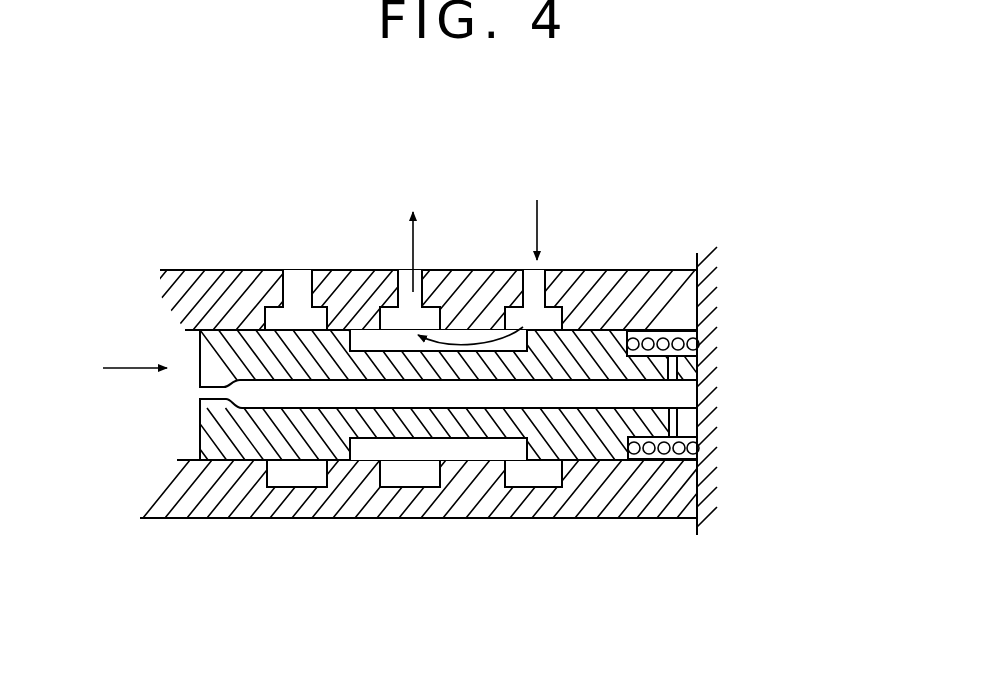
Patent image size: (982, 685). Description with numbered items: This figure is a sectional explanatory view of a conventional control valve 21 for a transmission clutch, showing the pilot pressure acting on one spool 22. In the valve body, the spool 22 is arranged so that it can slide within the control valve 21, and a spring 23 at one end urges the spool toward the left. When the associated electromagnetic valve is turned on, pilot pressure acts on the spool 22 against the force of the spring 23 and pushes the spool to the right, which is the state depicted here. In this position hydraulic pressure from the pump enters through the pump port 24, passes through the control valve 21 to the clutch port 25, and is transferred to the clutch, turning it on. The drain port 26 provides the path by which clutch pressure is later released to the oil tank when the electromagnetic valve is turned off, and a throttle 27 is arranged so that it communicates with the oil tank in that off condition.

The control valve 21 is at (652, 243).
The spool 22 is at (198, 358).
The spring 23 is at (698, 343).
The pump port 24 is at (535, 315).
The clutch port 25 is at (408, 290).
The drain port 26 is at (292, 312).
The throttle 27 is at (677, 367).